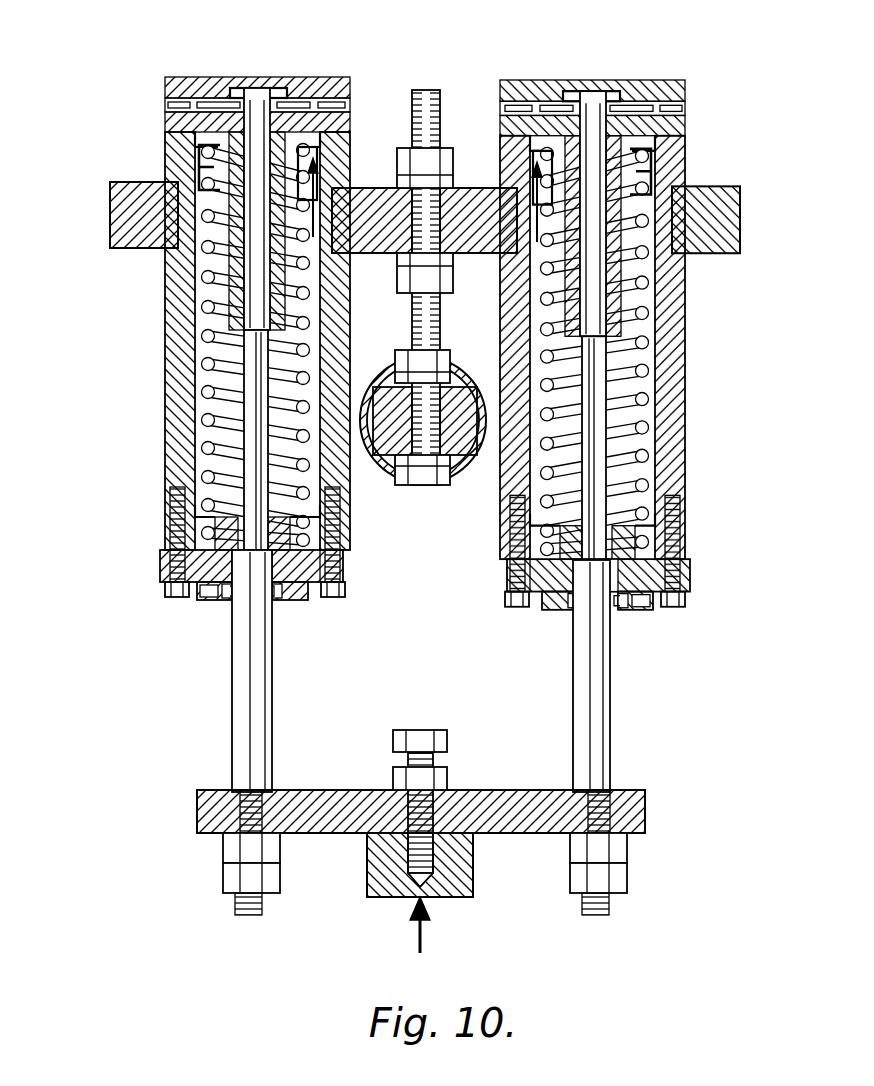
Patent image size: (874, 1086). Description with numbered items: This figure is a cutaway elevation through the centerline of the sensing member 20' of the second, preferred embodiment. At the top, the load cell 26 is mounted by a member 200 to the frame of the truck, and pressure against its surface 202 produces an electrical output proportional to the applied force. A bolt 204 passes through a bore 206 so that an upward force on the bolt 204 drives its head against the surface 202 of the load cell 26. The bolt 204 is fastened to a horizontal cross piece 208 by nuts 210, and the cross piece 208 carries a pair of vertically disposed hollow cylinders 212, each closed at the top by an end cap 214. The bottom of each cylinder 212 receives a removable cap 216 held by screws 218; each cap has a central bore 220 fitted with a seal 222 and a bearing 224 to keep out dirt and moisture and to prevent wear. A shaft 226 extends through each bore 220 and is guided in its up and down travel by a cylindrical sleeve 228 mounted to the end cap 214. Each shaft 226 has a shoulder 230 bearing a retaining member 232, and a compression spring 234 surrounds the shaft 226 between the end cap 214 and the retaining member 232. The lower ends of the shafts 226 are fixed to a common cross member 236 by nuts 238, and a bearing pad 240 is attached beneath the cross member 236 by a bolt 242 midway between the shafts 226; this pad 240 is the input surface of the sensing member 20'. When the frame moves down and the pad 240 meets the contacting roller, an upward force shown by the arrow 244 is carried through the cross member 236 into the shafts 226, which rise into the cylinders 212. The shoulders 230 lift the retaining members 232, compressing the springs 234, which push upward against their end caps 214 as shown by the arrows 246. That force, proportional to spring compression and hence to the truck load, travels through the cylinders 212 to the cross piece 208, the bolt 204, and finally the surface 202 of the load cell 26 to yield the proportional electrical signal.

The sensing member 20' is at (735, 51).
The load cell 26 is at (474, 374).
The member 200 is at (470, 483).
The surface 202 is at (388, 472).
The bolt 204 is at (428, 88).
The bore 206 is at (445, 238).
The horizontal cross piece 208 is at (112, 193).
The nuts 210 is at (405, 150).
The hollow cylinders 212 is at (180, 290).
The end cap 214 is at (238, 77).
The removable cap 216 is at (308, 602).
The screws 218 is at (172, 590).
The bore 220 is at (345, 578).
The seal 222 is at (232, 604).
The bearing 224 is at (200, 603).
The shaft 226 is at (232, 725).
The cylindrical sleeve 228 is at (205, 165).
The shoulder 230 is at (200, 550).
The retaining member 232 is at (215, 530).
The compression spring 234 is at (207, 337).
The cross member 236 is at (645, 795).
The nuts 238 is at (225, 864).
The bearing pad 240 is at (372, 897).
The bolt 242 is at (447, 760).
The arrow 244 is at (425, 942).
The arrows 246 is at (322, 156).